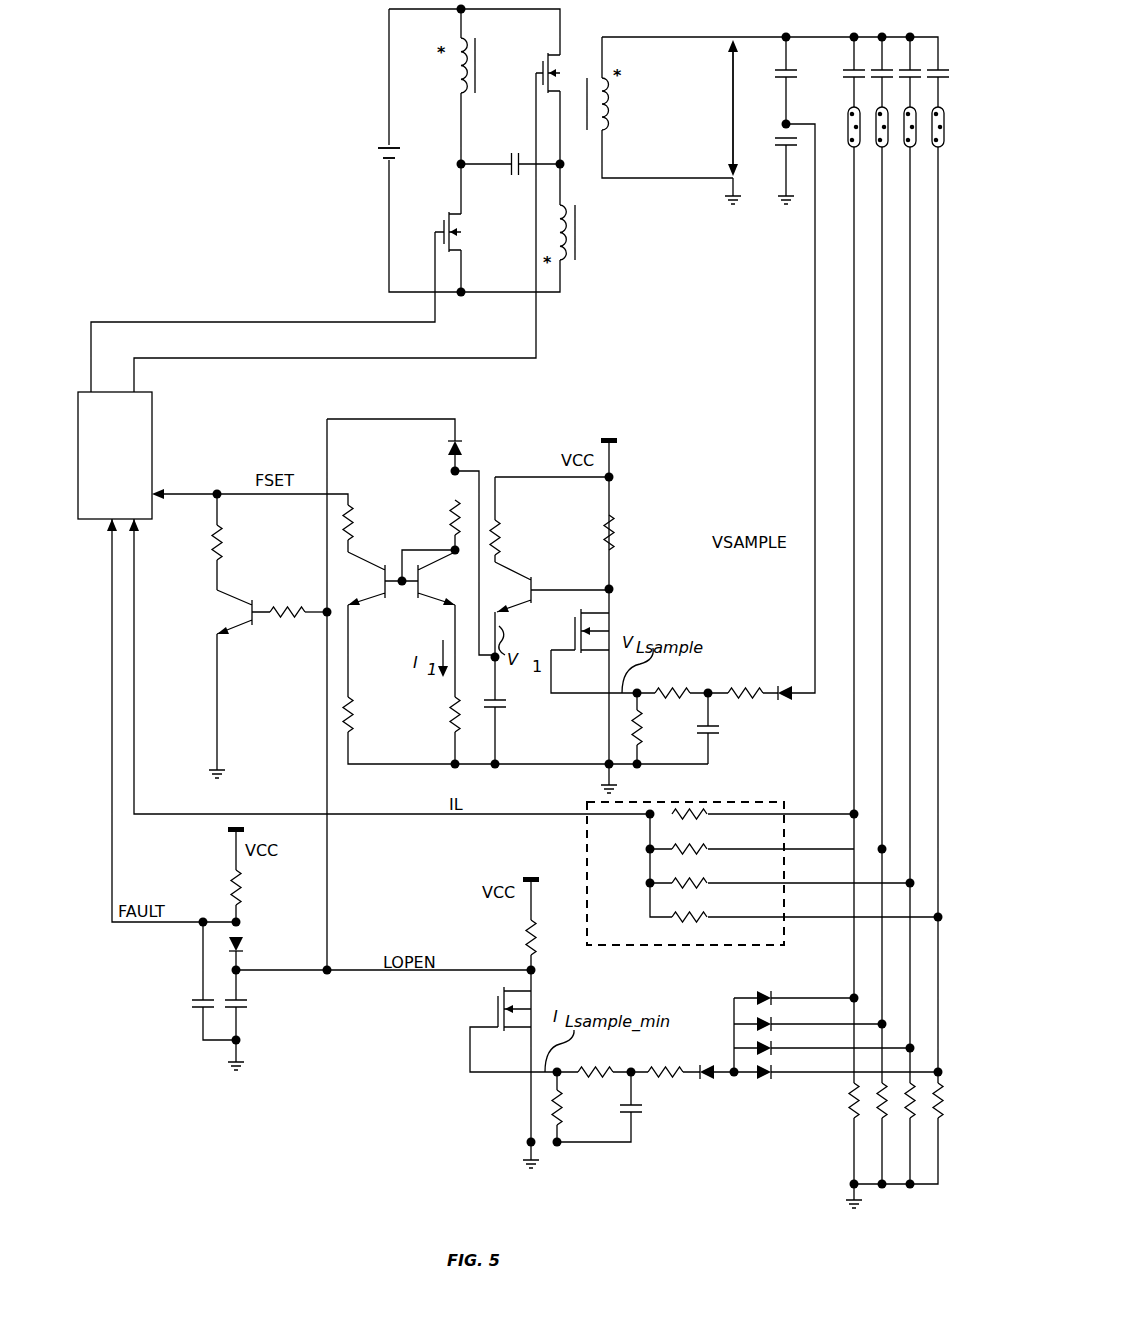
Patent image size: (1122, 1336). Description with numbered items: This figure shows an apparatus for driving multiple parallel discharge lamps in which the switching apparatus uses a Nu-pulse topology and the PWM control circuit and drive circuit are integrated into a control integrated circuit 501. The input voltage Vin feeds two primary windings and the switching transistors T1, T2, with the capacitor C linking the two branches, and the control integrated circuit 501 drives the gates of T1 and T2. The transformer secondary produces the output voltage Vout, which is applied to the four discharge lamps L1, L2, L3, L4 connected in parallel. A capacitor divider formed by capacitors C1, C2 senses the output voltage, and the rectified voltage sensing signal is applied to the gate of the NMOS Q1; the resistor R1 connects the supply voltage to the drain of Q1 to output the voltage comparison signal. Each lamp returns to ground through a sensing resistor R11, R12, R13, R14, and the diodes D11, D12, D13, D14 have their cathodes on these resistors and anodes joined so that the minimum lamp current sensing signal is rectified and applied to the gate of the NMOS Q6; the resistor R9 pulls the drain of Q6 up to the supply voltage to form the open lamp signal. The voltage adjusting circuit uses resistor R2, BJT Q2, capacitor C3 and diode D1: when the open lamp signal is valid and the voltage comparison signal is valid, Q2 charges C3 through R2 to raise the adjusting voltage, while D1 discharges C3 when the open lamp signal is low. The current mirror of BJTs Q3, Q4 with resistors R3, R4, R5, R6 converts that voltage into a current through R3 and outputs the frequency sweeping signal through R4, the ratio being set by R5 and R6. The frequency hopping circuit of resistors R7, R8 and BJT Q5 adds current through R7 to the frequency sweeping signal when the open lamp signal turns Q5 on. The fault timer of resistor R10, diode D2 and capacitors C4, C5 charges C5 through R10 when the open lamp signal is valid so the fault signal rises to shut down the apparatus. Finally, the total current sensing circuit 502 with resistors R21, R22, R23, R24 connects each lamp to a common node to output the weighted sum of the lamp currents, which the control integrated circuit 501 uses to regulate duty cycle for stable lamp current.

The control integrated circuit 501 is at (78, 508).
The total current sensing circuit 502 is at (685, 899).
The switching transistor T1 is at (462, 232).
The switching transistor T2 is at (532, 73).
The capacitor C is at (513, 176).
The capacitor C1 is at (795, 63).
The capacitor C2 is at (778, 155).
The discharge lamp L1 is at (848, 122).
The discharge lamp L2 is at (876, 122).
The discharge lamp L3 is at (904, 122).
The discharge lamp L4 is at (932, 122).
The resistor R1 is at (594, 532).
The resistor R2 is at (510, 537).
The resistor R3 is at (439, 519).
The resistor R4 is at (362, 522).
The resistor R5 is at (437, 714).
The resistor R6 is at (363, 714).
The resistor R7 is at (230, 542).
The resistor R8 is at (298, 624).
The resistor R9 is at (515, 937).
The resistor R10 is at (256, 887).
The sensing resistor R11 is at (848, 1125).
The sensing resistor R12 is at (876, 1125).
The sensing resistor R13 is at (904, 1125).
The sensing resistor R14 is at (932, 1125).
The resistor R21 is at (708, 822).
The resistor R22 is at (708, 857).
The resistor R23 is at (708, 891).
The resistor R24 is at (708, 925).
The NMOS Q1 is at (580, 642).
The BJT Q2 is at (552, 598).
The BJT Q3 is at (436, 590).
The BJT Q4 is at (369, 590).
The BJT Q5 is at (243, 623).
The NMOS Q6 is at (514, 1021).
The diode D1 is at (471, 451).
The diode D2 is at (252, 947).
The diode D11 is at (783, 1005).
The diode D12 is at (783, 1030).
The diode D13 is at (783, 1054).
The diode D14 is at (783, 1079).
The capacitor C3 is at (502, 692).
The capacitor C4 is at (246, 1018).
The capacitor C5 is at (193, 1018).
The input voltage Vin is at (364, 162).
The output voltage Vout is at (723, 108).